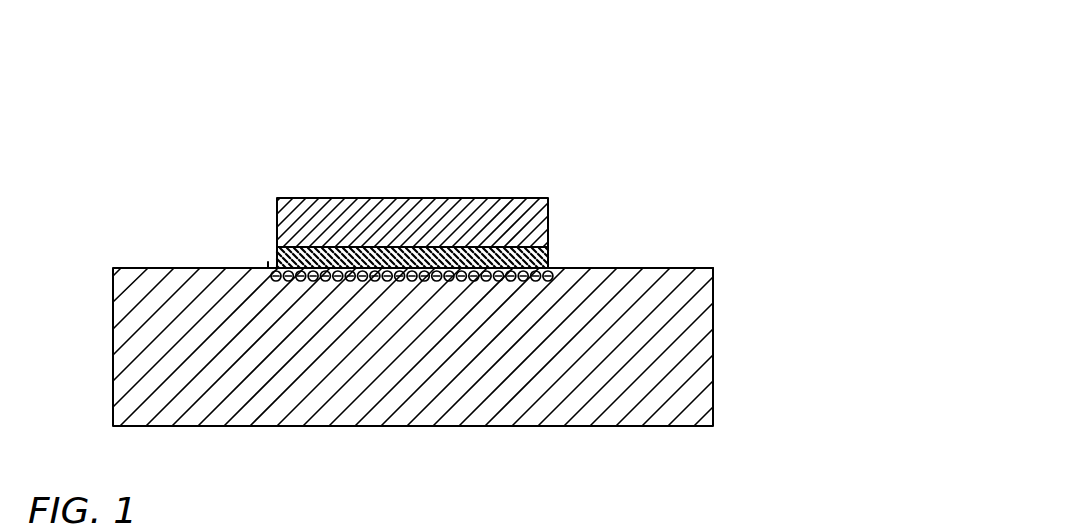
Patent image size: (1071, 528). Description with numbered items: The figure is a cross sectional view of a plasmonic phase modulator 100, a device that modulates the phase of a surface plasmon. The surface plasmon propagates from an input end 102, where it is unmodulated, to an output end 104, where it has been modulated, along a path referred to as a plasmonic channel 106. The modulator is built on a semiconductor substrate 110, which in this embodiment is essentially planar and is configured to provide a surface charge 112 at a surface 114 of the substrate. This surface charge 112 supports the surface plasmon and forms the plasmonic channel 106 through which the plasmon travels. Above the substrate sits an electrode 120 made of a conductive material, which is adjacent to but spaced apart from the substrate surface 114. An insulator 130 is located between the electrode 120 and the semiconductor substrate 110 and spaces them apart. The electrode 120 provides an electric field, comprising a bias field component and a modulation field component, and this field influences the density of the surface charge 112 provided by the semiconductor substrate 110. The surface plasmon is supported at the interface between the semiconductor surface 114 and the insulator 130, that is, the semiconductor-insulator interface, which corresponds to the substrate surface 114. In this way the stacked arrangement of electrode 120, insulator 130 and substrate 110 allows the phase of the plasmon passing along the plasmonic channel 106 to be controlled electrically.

The plasmonic phase modulator 100 is at (632, 73).
The input end 102 is at (173, 172).
The output end 104 is at (652, 174).
The plasmonic channel 106 is at (270, 261).
The semiconductor substrate 110 is at (713, 345).
The surface charge 112 is at (563, 269).
The surface 114 is at (614, 268).
The electrode 120 is at (413, 200).
The insulator 130 is at (550, 253).